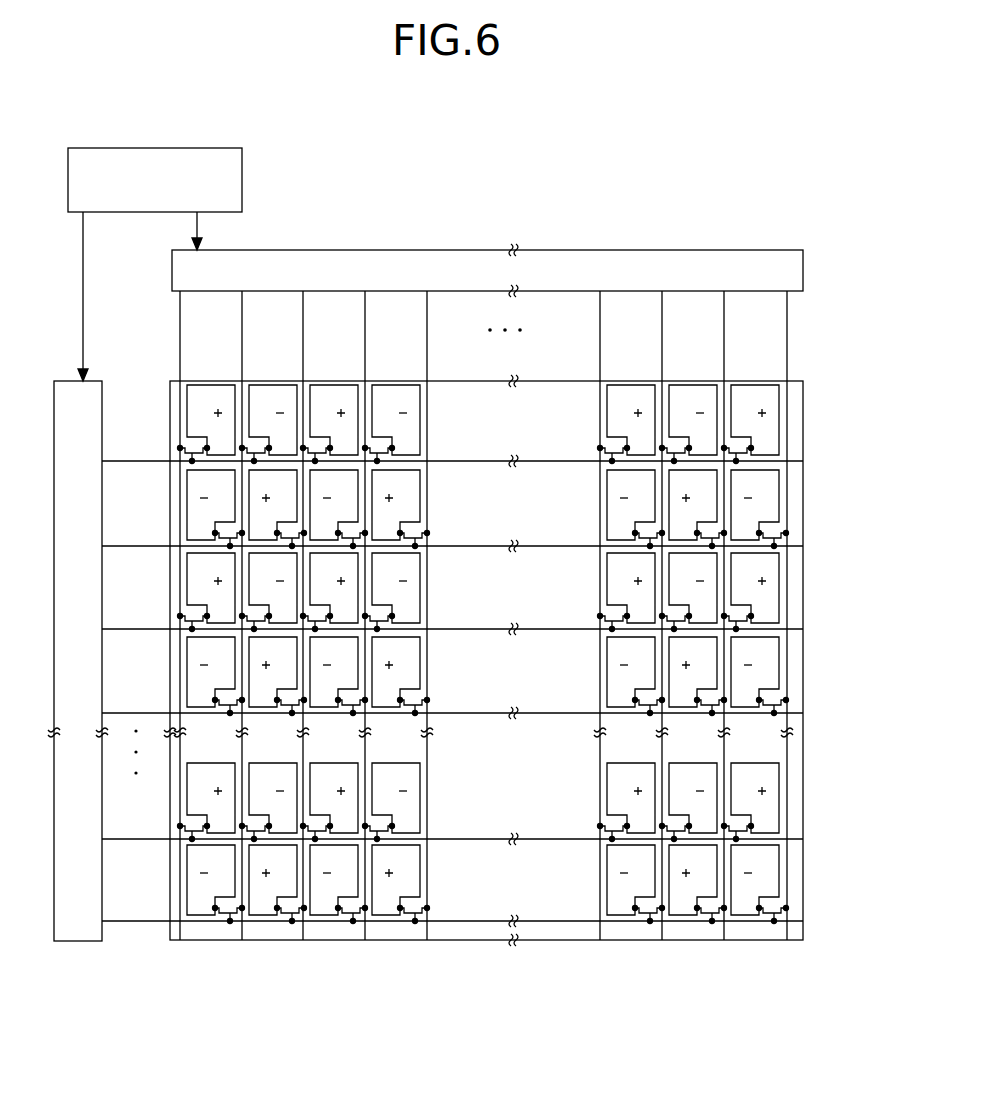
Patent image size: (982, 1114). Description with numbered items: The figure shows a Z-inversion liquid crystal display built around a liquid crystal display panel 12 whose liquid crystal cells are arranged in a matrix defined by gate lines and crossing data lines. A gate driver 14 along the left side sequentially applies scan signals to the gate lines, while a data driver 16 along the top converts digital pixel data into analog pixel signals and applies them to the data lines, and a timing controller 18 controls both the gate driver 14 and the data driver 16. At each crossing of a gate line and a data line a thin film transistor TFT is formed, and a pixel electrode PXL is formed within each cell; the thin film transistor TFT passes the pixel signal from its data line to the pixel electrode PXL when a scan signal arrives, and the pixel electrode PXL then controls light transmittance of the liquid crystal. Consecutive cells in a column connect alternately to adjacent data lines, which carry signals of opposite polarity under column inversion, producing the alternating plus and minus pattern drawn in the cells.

The liquid crystal display panel 12 is at (478, 618).
The gate driver 14 is at (86, 935).
The data driver 16 is at (560, 250).
The timing controller 18 is at (243, 160).
The pixel electrode PXL is at (768, 400).
The thin film transistor TFT is at (747, 455).